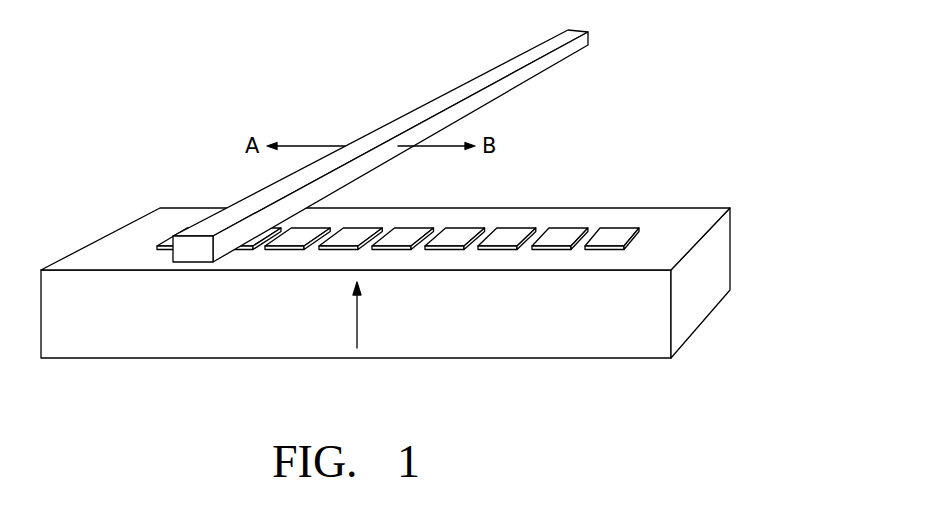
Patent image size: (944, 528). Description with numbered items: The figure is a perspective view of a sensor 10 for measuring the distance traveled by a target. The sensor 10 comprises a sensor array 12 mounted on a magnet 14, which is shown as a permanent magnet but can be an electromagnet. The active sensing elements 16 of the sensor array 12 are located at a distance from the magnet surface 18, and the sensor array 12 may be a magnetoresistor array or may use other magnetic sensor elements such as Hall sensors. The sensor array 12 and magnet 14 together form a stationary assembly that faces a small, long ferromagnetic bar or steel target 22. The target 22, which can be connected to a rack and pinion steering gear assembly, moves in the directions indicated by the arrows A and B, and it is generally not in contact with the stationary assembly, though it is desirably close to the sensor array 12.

The sensor 10 is at (381, 224).
The sensor array 12 is at (518, 231).
The magnet 14 is at (381, 300).
The sensing elements 16 is at (622, 232).
The magnet surface 18 is at (132, 238).
The target 22 is at (397, 123).